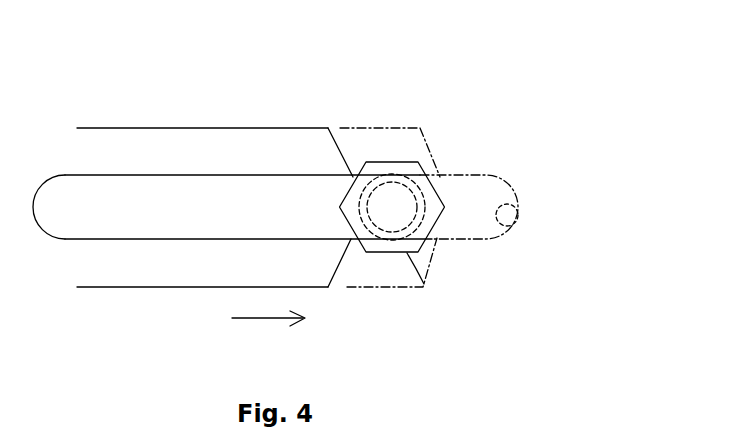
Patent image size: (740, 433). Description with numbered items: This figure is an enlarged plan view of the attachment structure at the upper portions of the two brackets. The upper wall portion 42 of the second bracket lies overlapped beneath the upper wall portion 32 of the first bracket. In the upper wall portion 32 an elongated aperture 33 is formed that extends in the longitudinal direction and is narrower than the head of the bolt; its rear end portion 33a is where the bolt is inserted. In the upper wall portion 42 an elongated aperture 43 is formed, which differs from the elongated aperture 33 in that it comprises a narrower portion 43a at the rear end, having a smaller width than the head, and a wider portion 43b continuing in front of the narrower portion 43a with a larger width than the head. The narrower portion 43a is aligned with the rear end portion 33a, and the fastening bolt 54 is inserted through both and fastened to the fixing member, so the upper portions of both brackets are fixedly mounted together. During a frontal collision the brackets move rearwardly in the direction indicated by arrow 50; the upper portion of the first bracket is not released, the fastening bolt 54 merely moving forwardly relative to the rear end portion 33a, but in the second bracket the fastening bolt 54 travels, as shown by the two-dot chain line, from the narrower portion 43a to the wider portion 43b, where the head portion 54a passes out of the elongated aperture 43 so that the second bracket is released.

The upper wall portion 32 is at (125, 272).
The elongated aperture 33 is at (213, 239).
The rear end portion 33a is at (438, 173).
The upper wall portion 42 is at (302, 181).
The elongated aperture 43 is at (302, 199).
The narrower portion 43a is at (354, 237).
The wider portion 43b is at (122, 130).
The direction of movement 50 is at (262, 325).
The fastening bolt 54 is at (407, 150).
The head portion 54a is at (424, 284).